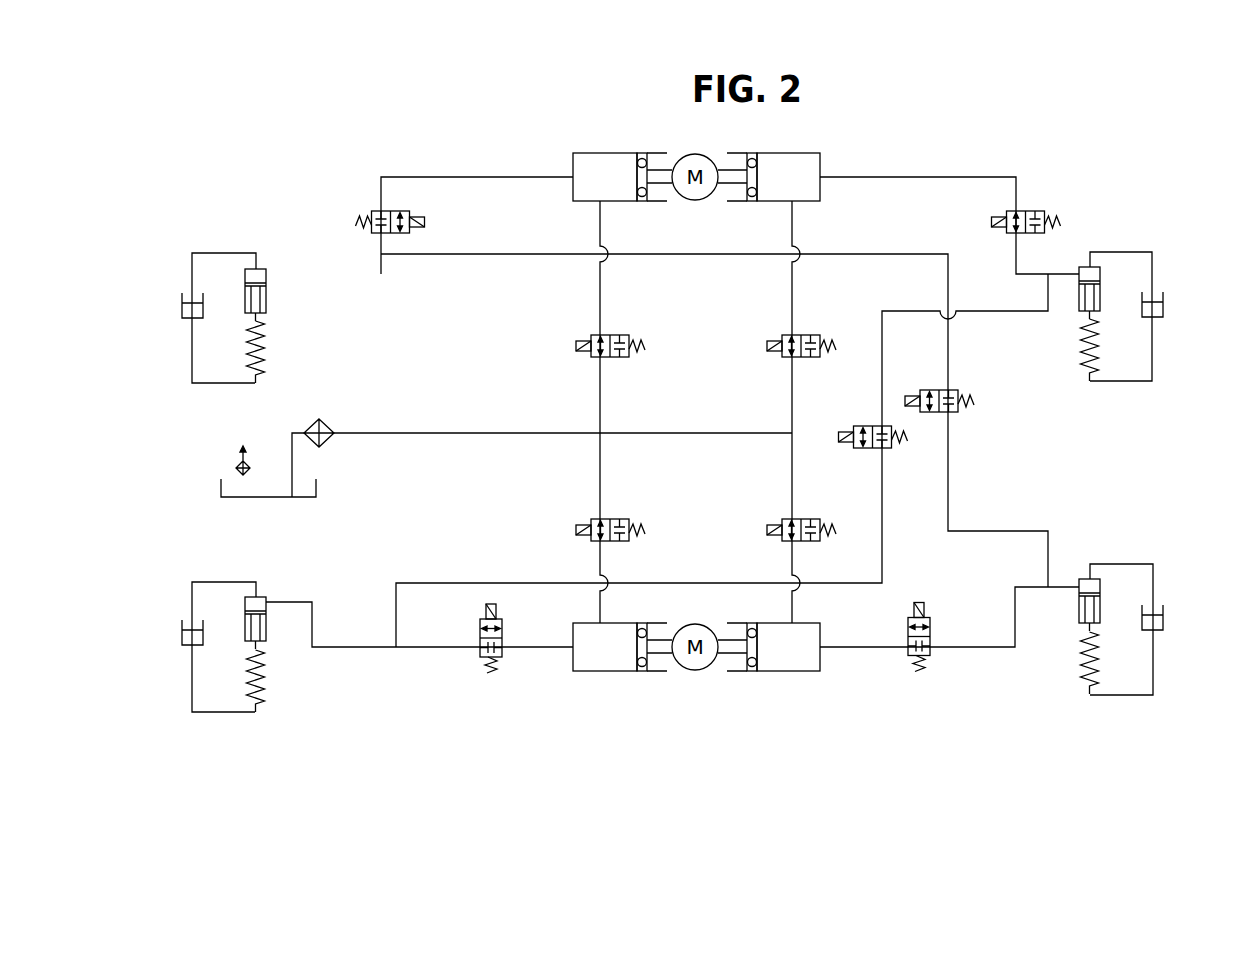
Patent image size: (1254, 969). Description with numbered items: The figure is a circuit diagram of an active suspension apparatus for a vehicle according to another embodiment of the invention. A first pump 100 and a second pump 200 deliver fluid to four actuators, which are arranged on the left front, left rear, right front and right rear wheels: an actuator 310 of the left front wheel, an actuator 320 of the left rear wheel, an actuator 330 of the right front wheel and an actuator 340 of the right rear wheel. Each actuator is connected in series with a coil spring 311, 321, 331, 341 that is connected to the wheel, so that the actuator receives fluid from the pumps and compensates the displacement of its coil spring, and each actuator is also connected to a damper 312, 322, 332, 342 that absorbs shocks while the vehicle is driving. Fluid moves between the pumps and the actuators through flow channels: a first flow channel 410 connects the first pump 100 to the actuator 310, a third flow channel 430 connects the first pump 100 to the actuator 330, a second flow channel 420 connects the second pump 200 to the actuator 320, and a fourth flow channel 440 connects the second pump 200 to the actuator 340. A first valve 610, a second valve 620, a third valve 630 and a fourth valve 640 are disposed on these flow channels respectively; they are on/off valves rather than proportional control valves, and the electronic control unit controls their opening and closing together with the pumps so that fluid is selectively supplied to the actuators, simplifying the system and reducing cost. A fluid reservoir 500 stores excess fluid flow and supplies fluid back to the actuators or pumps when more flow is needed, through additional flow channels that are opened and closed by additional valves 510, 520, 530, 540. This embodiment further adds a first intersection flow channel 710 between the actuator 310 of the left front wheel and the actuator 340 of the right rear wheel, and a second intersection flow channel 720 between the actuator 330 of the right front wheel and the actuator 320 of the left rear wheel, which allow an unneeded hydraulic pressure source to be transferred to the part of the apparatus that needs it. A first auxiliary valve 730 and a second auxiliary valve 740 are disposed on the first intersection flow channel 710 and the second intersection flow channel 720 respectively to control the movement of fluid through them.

The first pump 100 is at (634, 150).
The second pump 200 is at (760, 672).
The actuator 310 is at (243, 278).
The coil spring 311 is at (260, 347).
The damper 312 is at (181, 310).
The actuator 320 is at (245, 604).
The coil spring 321 is at (258, 677).
The damper 322 is at (181, 637).
The actuator 330 is at (1096, 266).
The coil spring 331 is at (1082, 350).
The damper 332 is at (1164, 308).
The actuator 340 is at (1097, 578).
The coil spring 341 is at (1082, 673).
The damper 342 is at (1164, 622).
The first flow channel 410 is at (476, 172).
The second flow channel 420 is at (344, 645).
The third flow channel 430 is at (875, 172).
The fourth flow channel 440 is at (868, 652).
The fluid reservoir 500 is at (238, 465).
The additional valve 510 is at (590, 336).
The additional valve 520 is at (590, 520).
The additional valve 530 is at (781, 336).
The additional valve 540 is at (781, 520).
The first valve 610 is at (374, 210).
The second valve 620 is at (478, 617).
The third valve 630 is at (1030, 211).
The fourth valve 640 is at (931, 656).
The first intersection flow channel 710 is at (465, 257).
The second intersection flow channel 720 is at (883, 552).
The first auxiliary valve 730 is at (960, 411).
The second auxiliary valve 740 is at (866, 426).